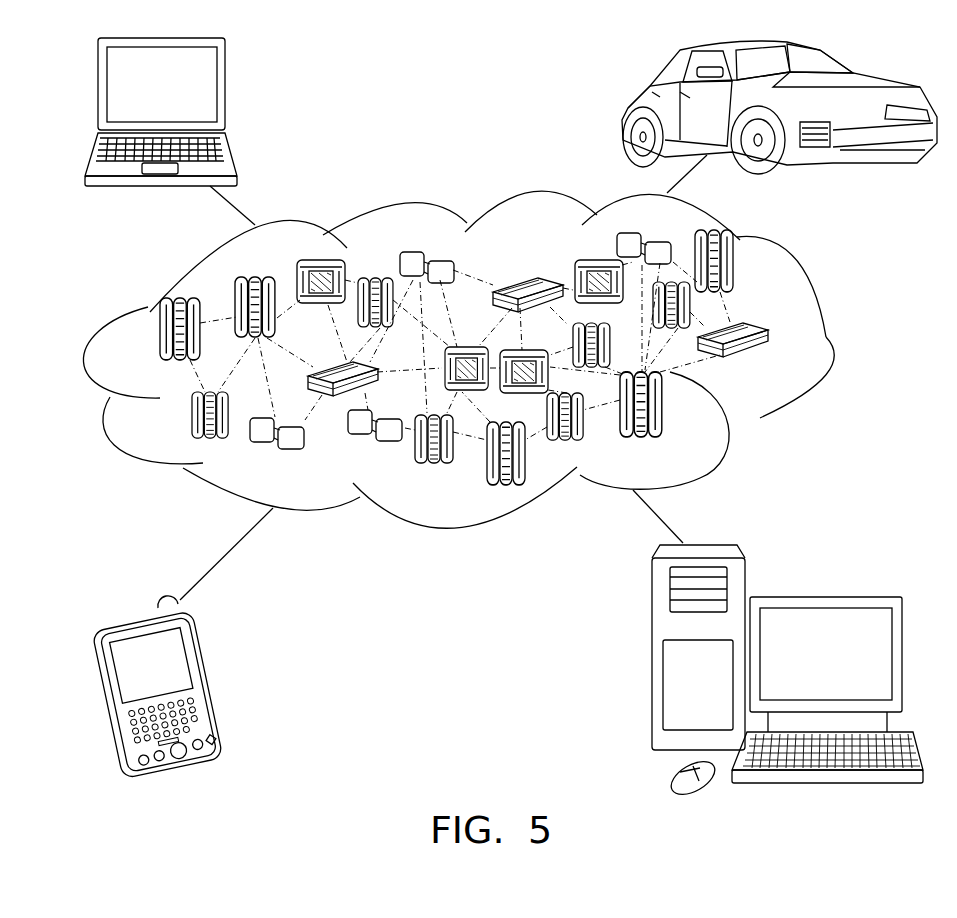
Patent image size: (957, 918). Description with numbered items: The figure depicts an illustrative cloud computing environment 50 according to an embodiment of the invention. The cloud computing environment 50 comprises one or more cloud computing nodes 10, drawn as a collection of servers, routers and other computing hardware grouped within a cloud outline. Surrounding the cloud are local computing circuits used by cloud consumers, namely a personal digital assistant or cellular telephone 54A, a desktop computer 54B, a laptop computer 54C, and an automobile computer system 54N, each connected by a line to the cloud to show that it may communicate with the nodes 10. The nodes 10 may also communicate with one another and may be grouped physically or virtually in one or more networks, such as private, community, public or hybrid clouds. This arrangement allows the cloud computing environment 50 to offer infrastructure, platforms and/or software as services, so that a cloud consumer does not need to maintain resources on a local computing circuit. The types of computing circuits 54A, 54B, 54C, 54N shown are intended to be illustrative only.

The cloud computing nodes 10 is at (770, 365).
The cloud computing environment 50 is at (826, 338).
The personal digital assistant (PDA) or cellular telephone 54A is at (215, 682).
The desktop computer 54B is at (823, 595).
The laptop computer 54C is at (225, 92).
The automobile computer system 54N is at (623, 108).